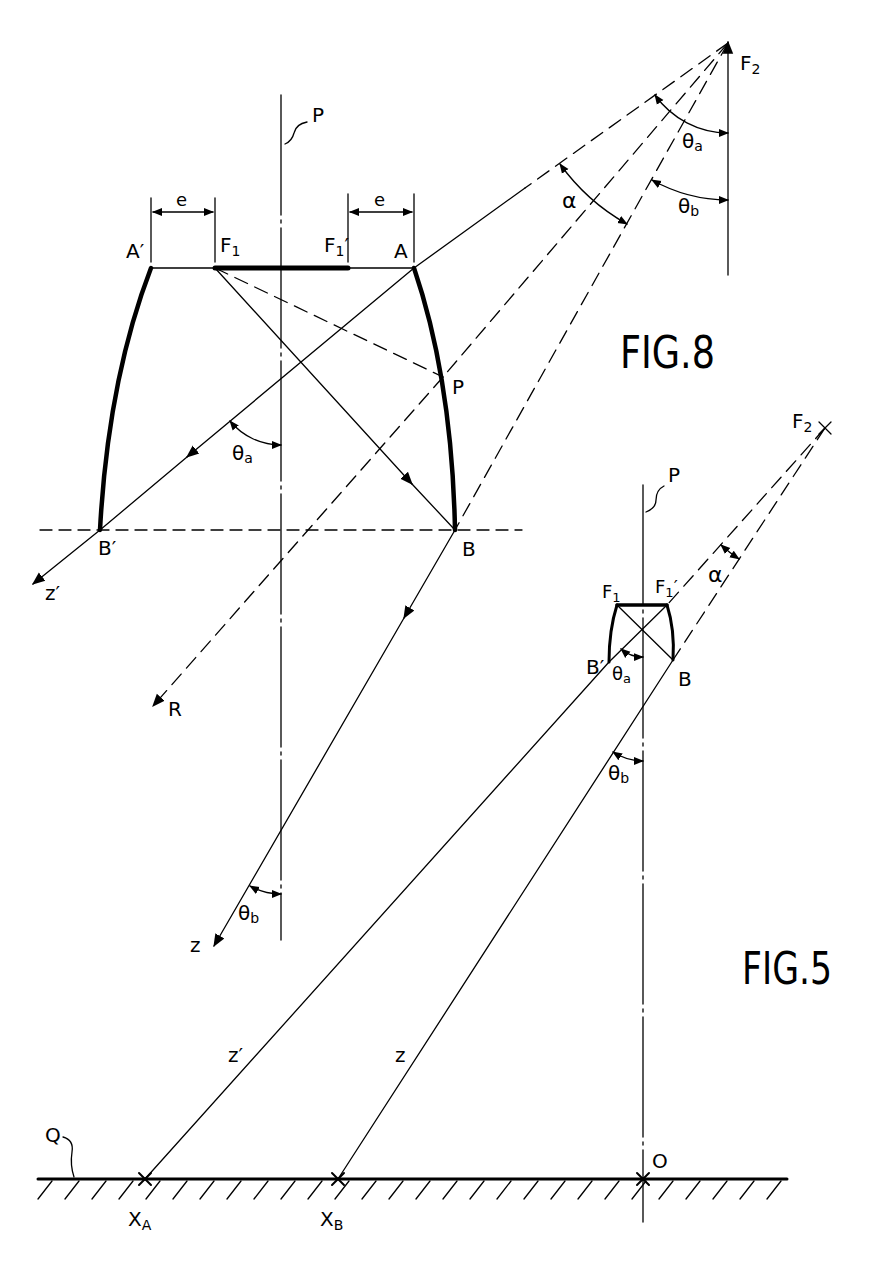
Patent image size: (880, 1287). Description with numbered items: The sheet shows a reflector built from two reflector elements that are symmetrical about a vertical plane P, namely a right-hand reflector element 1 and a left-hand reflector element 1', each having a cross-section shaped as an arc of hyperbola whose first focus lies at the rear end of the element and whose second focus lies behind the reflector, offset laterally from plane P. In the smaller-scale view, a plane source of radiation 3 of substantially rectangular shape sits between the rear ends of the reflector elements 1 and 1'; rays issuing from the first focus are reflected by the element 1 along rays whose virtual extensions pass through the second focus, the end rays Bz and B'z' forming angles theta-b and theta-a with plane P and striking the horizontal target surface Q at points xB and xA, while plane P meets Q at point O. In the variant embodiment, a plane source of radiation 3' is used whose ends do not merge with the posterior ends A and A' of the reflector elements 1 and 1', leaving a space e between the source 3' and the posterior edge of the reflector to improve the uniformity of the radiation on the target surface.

In FIG. 8, the right-hand reflector element 1 is at (444, 399).
In FIG. 5, the right-hand reflector element 1 is at (691, 632).
In FIG. 8, the left-hand reflector element 1' is at (106, 399).
In FIG. 5, the left-hand reflector element 1' is at (588, 633).
In FIG. 5, the plane source of radiation 3 is at (640, 574).
In FIG. 8, the plane source of radiation 3' is at (281, 235).